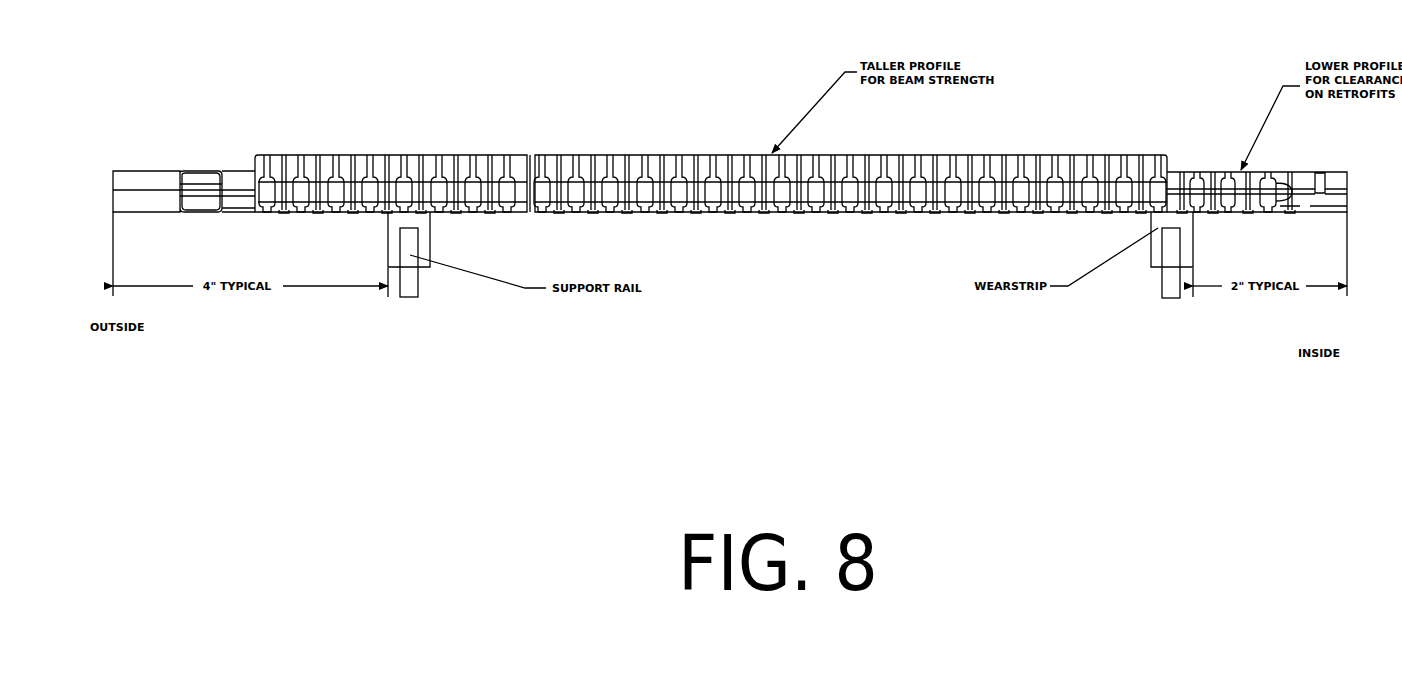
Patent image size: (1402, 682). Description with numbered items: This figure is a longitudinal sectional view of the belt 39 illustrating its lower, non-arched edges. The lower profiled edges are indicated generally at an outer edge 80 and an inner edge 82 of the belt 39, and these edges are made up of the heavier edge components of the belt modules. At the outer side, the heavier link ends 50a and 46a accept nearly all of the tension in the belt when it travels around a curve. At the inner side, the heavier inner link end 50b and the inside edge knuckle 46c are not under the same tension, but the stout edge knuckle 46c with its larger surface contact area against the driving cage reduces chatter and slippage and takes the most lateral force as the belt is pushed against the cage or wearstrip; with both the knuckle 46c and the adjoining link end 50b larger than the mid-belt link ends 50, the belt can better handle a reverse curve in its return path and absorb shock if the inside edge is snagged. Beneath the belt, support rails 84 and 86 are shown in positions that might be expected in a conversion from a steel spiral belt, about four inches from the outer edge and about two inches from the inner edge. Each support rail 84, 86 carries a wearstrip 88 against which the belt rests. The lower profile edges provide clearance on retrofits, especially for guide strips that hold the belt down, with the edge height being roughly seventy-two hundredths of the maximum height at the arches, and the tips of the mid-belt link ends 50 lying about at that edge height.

The lower profiled outer edge 80 is at (131, 136).
The heavier outer link end 50a is at (205, 171).
The belt 39 is at (502, 84).
The lower profiled inner edge 82 is at (1225, 96).
The heavier inner link end 50b is at (1268, 172).
The mid-belt link ends 50 is at (713, 212).
The wearstrip 88 is at (423, 222).
The support rail 84 is at (412, 285).
The support rail 86 is at (1168, 287).
The heavier outer link end 46a is at (120, 201).
The inside edge knuckle 46c is at (1337, 200).